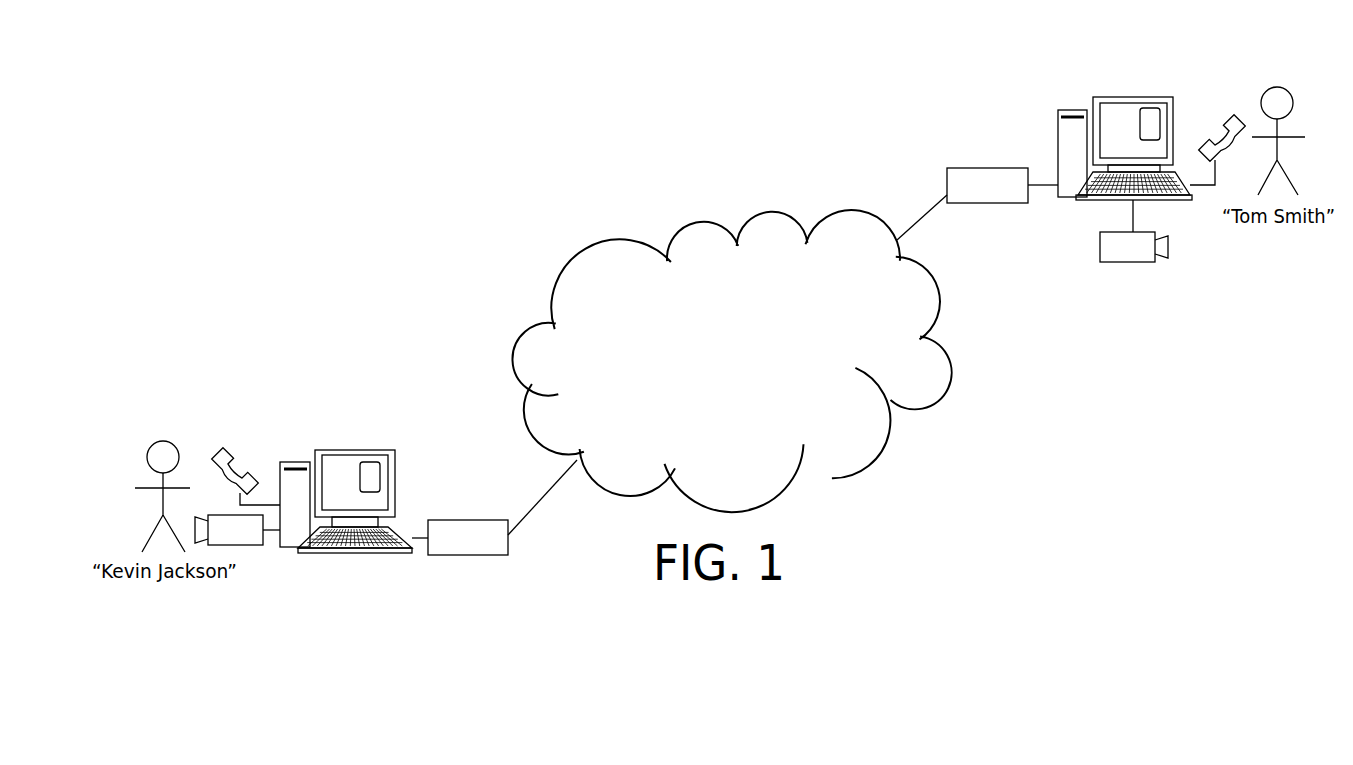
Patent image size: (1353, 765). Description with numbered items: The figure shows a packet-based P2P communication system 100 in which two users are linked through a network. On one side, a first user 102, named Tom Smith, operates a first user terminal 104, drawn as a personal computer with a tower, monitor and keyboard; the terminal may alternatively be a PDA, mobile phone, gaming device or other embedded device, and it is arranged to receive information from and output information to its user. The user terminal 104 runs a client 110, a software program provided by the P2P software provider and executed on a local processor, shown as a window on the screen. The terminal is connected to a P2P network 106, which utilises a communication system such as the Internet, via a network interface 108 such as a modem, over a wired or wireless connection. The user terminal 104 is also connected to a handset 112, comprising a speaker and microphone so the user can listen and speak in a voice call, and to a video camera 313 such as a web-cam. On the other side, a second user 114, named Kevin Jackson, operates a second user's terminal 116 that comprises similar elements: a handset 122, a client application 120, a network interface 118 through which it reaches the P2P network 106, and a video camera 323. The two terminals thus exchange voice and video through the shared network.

The P2P communication system 100 is at (510, 195).
The first user 102 is at (1277, 87).
The first user terminal 104 is at (1105, 97).
The P2P network 106 is at (948, 362).
The network interface 108 is at (990, 168).
The client 110 is at (1150, 108).
The handset 112 is at (1232, 115).
The second user 114 is at (163, 440).
The second user's terminal 116 is at (322, 450).
The network interface 118 is at (465, 520).
The client application 120 is at (368, 462).
The handset 122 is at (224, 450).
The video camera 313 is at (1130, 262).
The video camera 323 is at (255, 546).